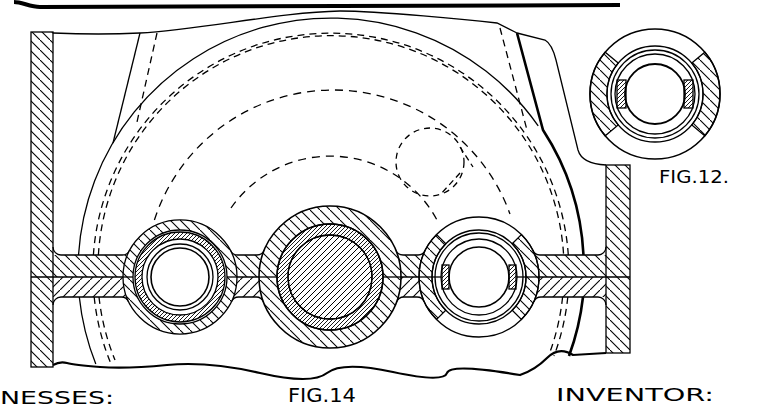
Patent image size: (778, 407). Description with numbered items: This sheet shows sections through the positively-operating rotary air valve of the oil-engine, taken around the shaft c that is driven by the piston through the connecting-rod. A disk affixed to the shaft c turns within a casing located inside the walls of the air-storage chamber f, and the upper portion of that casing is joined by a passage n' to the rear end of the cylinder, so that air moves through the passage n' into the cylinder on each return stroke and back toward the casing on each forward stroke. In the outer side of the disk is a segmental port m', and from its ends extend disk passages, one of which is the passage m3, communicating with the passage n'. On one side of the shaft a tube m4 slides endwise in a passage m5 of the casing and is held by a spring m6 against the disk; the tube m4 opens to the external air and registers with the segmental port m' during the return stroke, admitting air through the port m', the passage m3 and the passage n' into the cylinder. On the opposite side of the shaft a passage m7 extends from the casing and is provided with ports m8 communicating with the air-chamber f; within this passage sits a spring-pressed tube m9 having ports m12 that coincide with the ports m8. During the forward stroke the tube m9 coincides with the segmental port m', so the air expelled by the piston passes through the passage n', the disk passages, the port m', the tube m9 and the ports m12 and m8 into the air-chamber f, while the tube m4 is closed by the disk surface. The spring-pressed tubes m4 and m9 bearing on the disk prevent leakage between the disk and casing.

In FIG. 14, the passage n' is at (329, 187).
In FIG. 14, the segmental port m' is at (330, 195).
In FIG. 12, the segmental port m' is at (655, 71).
In FIG. 14, the passage m3 is at (418, 173).
In FIG. 14, the tube m4 is at (152, 270).
In FIG. 14, the passage m5 is at (193, 213).
In FIG. 14, the spring m6 is at (197, 322).
In FIG. 14, the passage m7 is at (517, 303).
In FIG. 12, the passage m7 is at (707, 58).
In FIG. 14, the ports m8 is at (476, 212).
In FIG. 12, the ports m8 is at (643, 150).
In FIG. 14, the tube m9 is at (518, 252).
In FIG. 12, the tube m9 is at (598, 78).
In FIG. 14, the ports m12 is at (483, 243).
In FIG. 12, the ports m12 is at (647, 58).
In FIG. 14, the shaft c is at (342, 297).
In FIG. 14, the air-chamber f is at (593, 222).